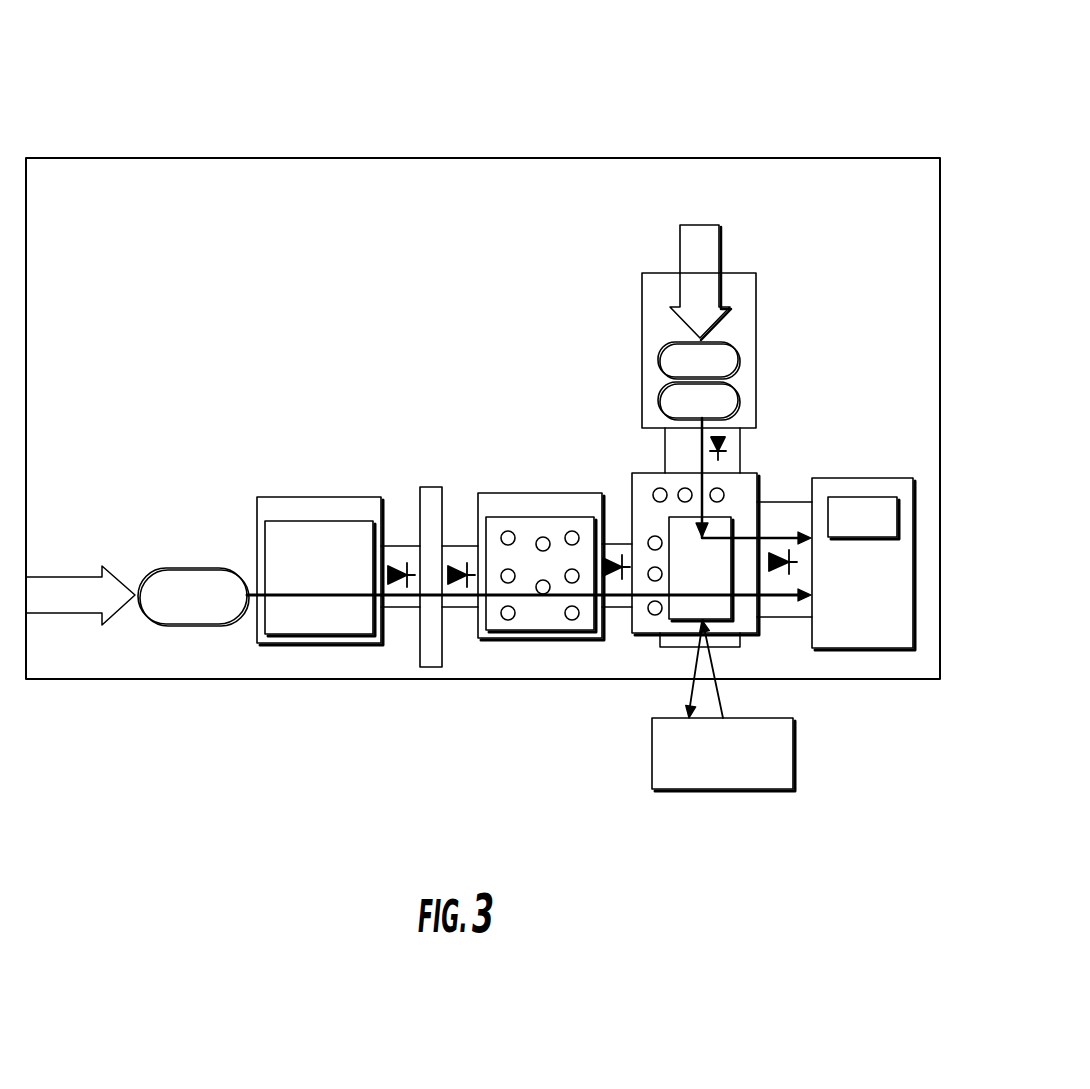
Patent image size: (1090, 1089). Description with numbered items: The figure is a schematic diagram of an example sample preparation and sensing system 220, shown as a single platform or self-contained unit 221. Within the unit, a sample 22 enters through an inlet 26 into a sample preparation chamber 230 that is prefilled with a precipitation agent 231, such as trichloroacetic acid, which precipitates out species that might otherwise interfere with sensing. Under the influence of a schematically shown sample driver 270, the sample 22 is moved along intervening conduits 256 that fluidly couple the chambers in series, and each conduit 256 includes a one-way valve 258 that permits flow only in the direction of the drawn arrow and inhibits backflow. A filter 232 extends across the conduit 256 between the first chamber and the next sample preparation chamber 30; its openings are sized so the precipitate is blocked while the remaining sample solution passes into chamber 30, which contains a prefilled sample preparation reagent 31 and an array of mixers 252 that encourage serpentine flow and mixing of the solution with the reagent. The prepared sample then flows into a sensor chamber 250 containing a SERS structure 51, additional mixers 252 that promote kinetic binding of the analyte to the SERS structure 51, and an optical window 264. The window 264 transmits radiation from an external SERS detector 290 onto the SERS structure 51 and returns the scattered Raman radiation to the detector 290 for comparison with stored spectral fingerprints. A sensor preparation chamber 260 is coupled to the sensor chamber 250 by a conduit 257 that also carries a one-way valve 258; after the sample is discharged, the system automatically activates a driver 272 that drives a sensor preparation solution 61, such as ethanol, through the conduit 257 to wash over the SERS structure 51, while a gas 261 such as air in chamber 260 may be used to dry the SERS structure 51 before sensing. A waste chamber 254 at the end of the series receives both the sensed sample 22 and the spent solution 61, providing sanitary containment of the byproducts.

The sample preparation system 220 is at (186, 58).
The self-contained unit 221 is at (598, 158).
The sample 22 is at (195, 568).
The inlet 26 is at (250, 592).
The sample preparation chamber 230 is at (325, 497).
The precipitation agent 231 is at (280, 521).
The one-way valve 258 is at (398, 562).
The filter 232 is at (433, 487).
The sample preparation chamber 30 is at (537, 493).
The sample preparation reagent (SPR) 31 is at (560, 517).
The mixers 252 is at (648, 611).
The sensor chamber 250 is at (634, 473).
The optical window 264 is at (642, 633).
The SERS structure 51 is at (731, 619).
The conduit 257 is at (742, 448).
The sensor preparation chamber 260 is at (756, 347).
The driver 272 is at (719, 262).
The gas 261 is at (658, 357).
The sensor preparation solution 61 is at (738, 397).
The waste chamber 254 is at (865, 478).
The SERS detector 290 is at (725, 789).
The sample driver 270 is at (83, 613).
The conduits 256 is at (403, 608).